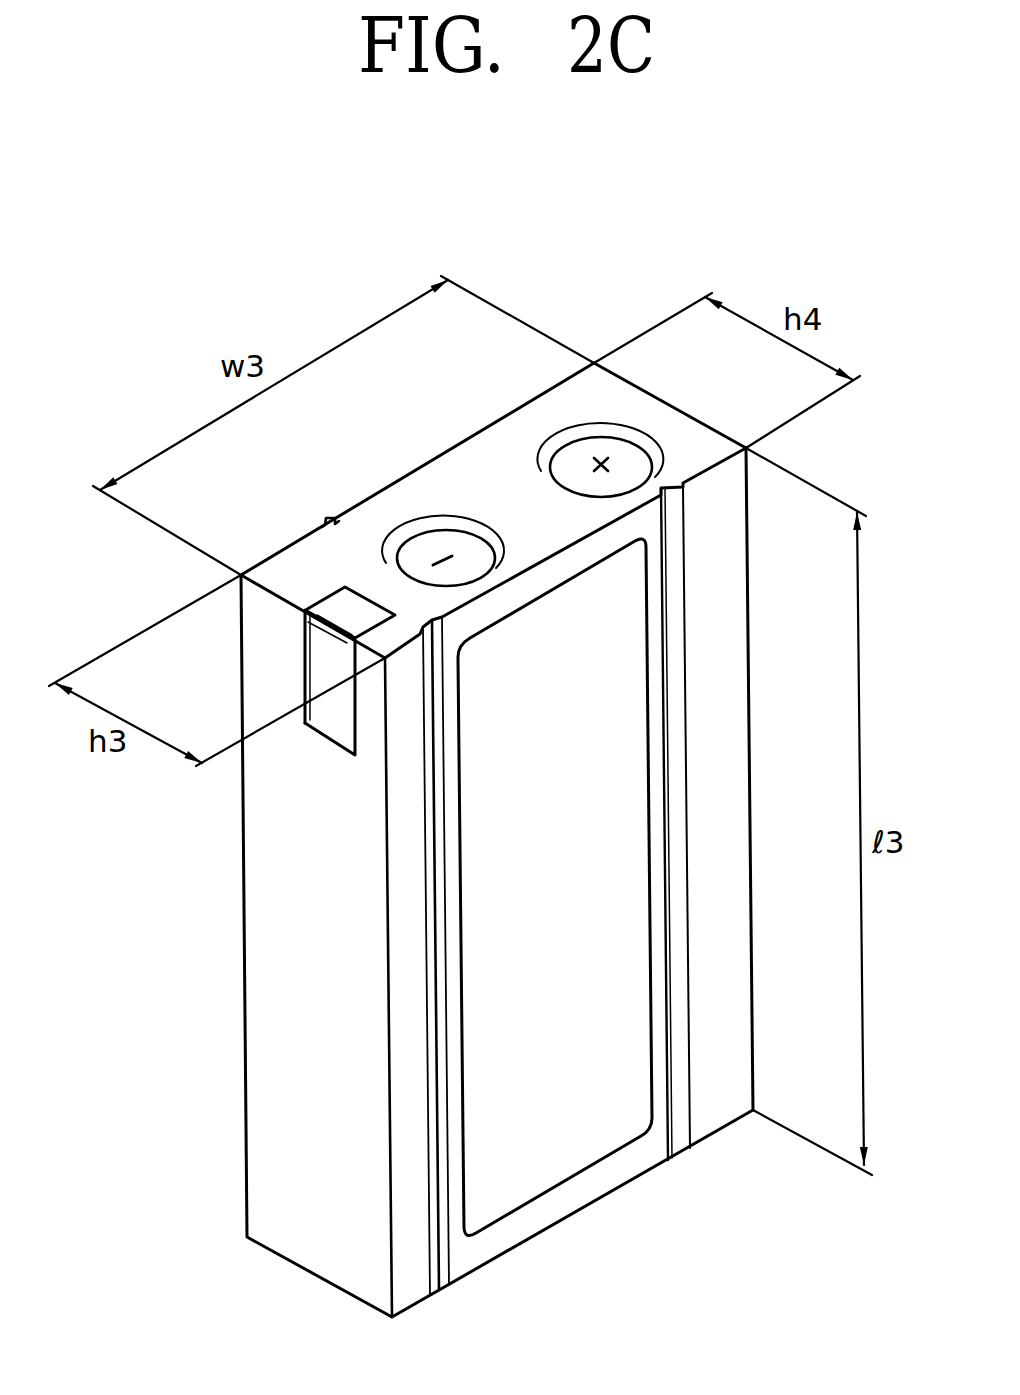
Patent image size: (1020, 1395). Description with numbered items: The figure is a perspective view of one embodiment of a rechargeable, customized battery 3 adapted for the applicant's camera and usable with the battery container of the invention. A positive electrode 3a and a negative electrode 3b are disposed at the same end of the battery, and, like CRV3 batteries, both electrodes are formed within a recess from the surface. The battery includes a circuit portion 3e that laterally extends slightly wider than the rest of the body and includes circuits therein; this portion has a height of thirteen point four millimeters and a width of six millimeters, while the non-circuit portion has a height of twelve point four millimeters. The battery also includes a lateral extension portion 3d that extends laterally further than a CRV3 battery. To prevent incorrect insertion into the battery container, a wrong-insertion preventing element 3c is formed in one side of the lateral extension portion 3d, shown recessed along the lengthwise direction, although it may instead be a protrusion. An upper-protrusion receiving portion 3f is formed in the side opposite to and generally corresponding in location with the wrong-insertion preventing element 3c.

The customized battery 3 is at (142, 1219).
The positive electrode 3a is at (570, 453).
The negative electrode 3b is at (422, 548).
The wrong-insertion preventing element 3c is at (440, 1155).
The lateral extension portion 3d is at (295, 580).
The circuit portion 3e is at (717, 1082).
The upper-protrusion receiving portion 3f is at (335, 518).